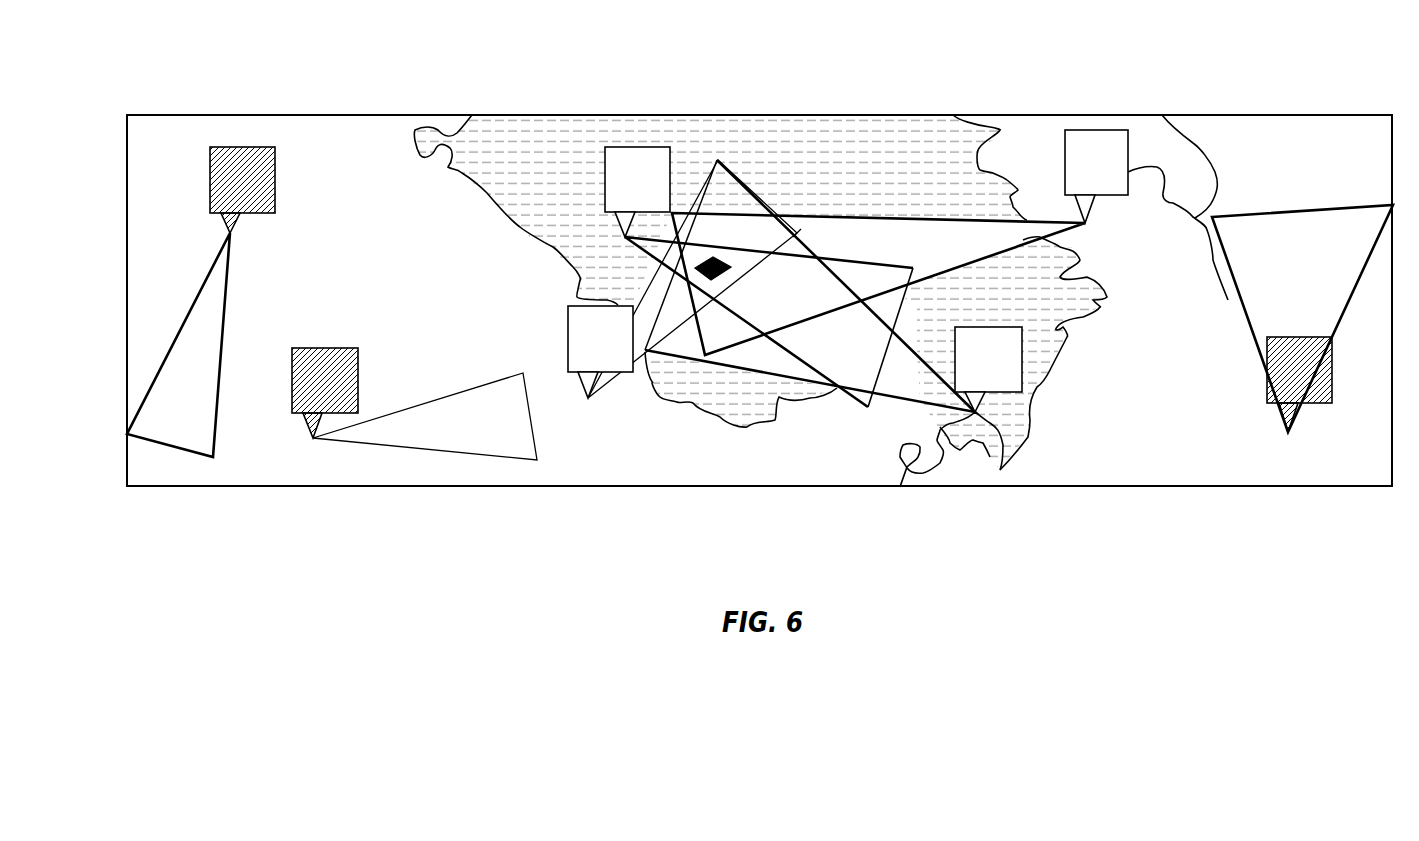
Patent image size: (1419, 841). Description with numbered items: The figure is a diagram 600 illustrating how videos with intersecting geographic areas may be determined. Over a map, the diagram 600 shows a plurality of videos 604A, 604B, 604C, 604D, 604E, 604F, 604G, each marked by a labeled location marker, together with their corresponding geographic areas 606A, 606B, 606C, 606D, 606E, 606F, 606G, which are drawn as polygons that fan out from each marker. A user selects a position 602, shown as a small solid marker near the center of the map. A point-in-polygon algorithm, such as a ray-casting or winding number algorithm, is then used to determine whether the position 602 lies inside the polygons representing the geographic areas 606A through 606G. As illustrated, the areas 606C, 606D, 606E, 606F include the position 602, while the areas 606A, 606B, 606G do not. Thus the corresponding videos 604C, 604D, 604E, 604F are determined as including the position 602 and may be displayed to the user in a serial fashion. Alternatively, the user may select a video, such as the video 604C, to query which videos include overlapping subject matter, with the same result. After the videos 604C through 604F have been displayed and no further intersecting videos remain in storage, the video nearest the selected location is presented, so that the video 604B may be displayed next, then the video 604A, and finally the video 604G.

The diagram 600 is at (1231, 72).
The position 602 is at (725, 262).
The video 604A is at (230, 233).
The video 604B is at (313, 438).
The video 604C is at (607, 212).
The video 604D is at (597, 373).
The video 604E is at (975, 412).
The video 604F is at (1085, 223).
The video 604G is at (1288, 432).
The geographic area 606A is at (230, 312).
The geographic area 606B is at (448, 392).
The geographic area 606C is at (898, 263).
The geographic area 606D is at (713, 190).
The geographic area 606E is at (777, 378).
The geographic area 606F is at (883, 215).
The geographic area 606G is at (1297, 226).